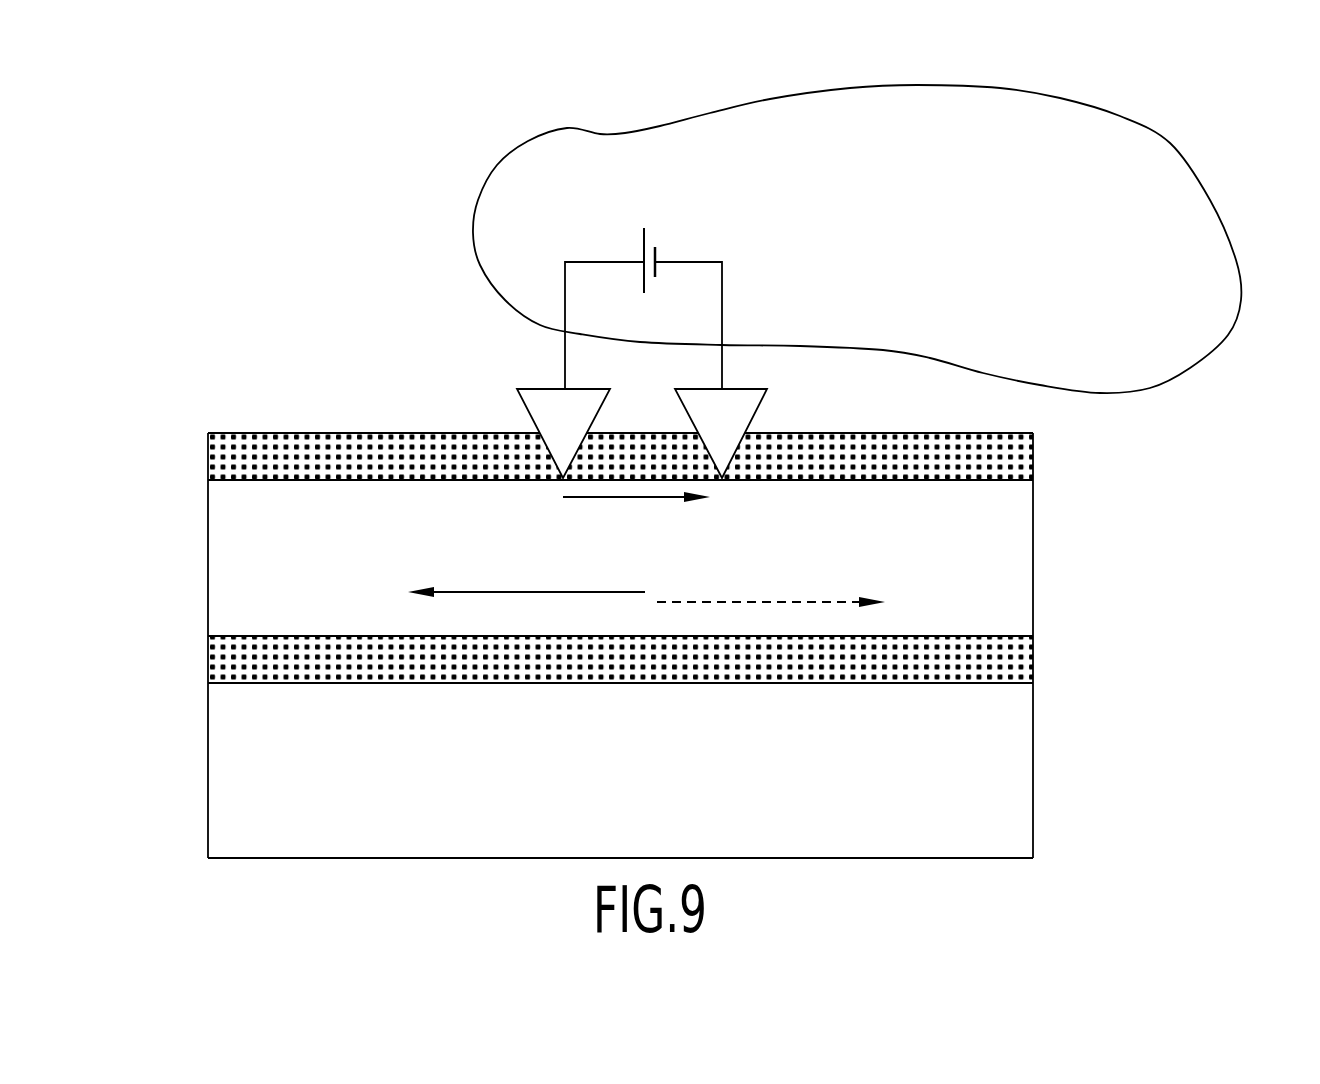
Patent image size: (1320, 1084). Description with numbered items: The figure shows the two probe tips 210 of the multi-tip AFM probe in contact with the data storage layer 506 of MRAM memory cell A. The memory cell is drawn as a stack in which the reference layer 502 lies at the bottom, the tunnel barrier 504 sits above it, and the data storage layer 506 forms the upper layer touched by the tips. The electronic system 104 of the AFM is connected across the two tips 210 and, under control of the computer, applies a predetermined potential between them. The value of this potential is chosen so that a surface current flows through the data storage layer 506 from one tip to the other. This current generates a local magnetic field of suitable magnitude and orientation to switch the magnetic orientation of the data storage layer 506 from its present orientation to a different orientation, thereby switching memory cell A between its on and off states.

The electronic system 104 is at (857, 239).
The probe tips 210 is at (498, 406).
The data storage layer 506 is at (1033, 553).
The tunnel barrier 504 is at (1033, 660).
The reference layer 502 is at (1033, 765).